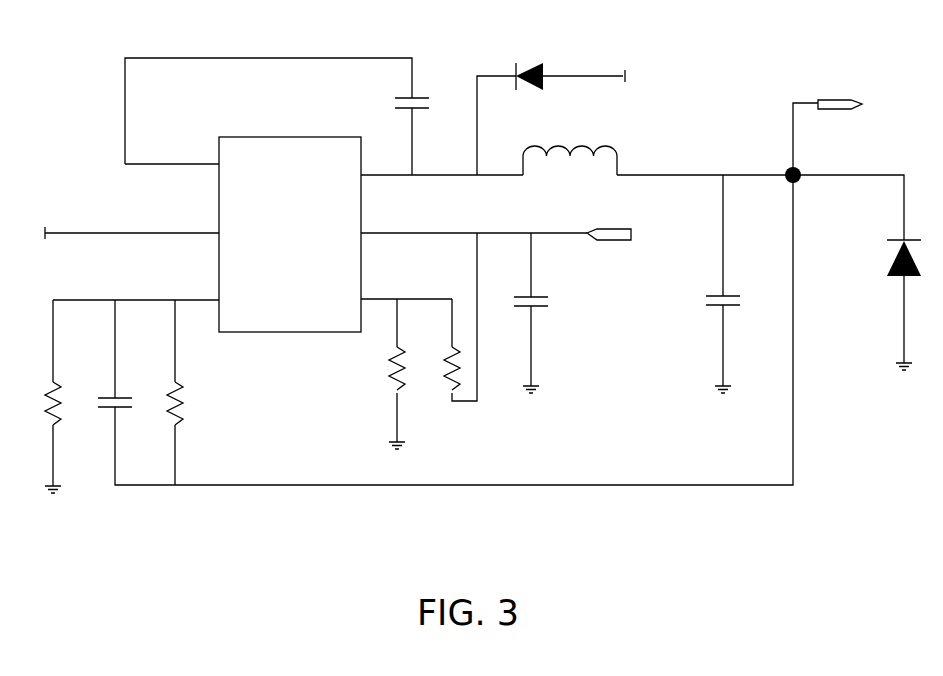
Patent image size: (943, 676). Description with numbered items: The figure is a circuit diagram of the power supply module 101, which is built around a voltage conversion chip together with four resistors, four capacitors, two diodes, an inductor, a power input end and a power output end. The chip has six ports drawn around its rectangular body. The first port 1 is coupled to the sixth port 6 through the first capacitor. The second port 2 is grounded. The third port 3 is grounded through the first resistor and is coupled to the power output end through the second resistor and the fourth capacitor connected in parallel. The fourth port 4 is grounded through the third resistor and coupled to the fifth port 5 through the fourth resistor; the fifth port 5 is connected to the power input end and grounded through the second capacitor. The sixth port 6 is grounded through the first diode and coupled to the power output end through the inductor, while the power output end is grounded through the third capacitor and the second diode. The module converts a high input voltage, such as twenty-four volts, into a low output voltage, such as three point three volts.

The power supply module 101 is at (86, 117).
The first port BST 1 is at (172, 155).
The second port GND 2 is at (132, 223).
The third port FB 3 is at (136, 288).
The fourth port EN 4 is at (406, 284).
The fifth port Vin 5 is at (474, 220).
The sixth port SW 6 is at (442, 160).